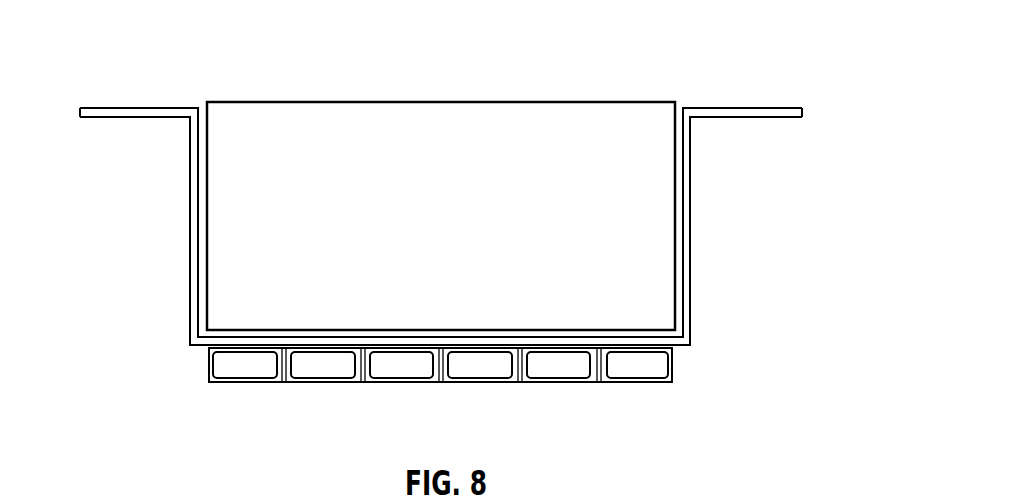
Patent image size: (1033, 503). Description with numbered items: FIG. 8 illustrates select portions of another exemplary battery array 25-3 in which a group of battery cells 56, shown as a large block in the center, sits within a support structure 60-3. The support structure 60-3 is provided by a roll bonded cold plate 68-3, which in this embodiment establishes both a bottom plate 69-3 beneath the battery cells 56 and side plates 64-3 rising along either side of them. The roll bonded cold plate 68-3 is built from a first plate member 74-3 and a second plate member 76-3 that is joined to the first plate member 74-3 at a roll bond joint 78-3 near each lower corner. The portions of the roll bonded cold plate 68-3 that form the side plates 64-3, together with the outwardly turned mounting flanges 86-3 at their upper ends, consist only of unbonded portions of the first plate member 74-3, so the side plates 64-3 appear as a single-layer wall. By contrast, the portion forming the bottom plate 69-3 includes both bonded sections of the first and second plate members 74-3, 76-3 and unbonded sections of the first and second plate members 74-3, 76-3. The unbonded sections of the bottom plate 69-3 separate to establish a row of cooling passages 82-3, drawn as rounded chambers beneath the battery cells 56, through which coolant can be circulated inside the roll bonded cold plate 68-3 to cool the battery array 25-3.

The battery array 25-3 is at (492, 84).
The battery cells 56 is at (455, 228).
The support structure 60-3 is at (831, 111).
The side plates 64-3 is at (167, 238).
The first plate member 74-3 is at (191, 154).
The mounting flanges 86-3 is at (135, 97).
The roll bond joint 78-3 is at (194, 350).
The roll bonded cold plate 68-3 is at (348, 405).
The second plate member 76-3 is at (245, 383).
The bottom plate 69-3 is at (514, 383).
The cooling passages 82-3 is at (240, 362).